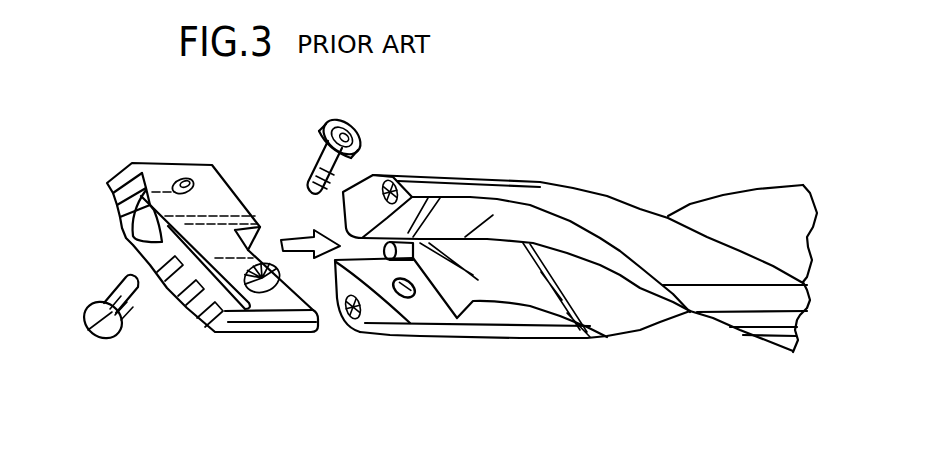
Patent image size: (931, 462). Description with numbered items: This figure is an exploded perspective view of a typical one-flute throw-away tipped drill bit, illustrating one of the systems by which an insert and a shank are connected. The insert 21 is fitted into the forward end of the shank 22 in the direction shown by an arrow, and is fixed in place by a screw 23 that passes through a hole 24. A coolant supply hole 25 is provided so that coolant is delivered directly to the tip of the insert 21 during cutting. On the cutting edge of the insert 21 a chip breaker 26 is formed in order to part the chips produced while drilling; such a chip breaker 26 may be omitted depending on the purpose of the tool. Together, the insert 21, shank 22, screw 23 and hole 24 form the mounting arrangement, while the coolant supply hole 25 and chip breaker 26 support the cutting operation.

The insert 21 is at (212, 242).
The shank 22 is at (576, 261).
The screw 23 is at (106, 340).
The hole 24 is at (410, 295).
The coolant supply hole 25 is at (390, 181).
The chip breaker 26 is at (212, 333).